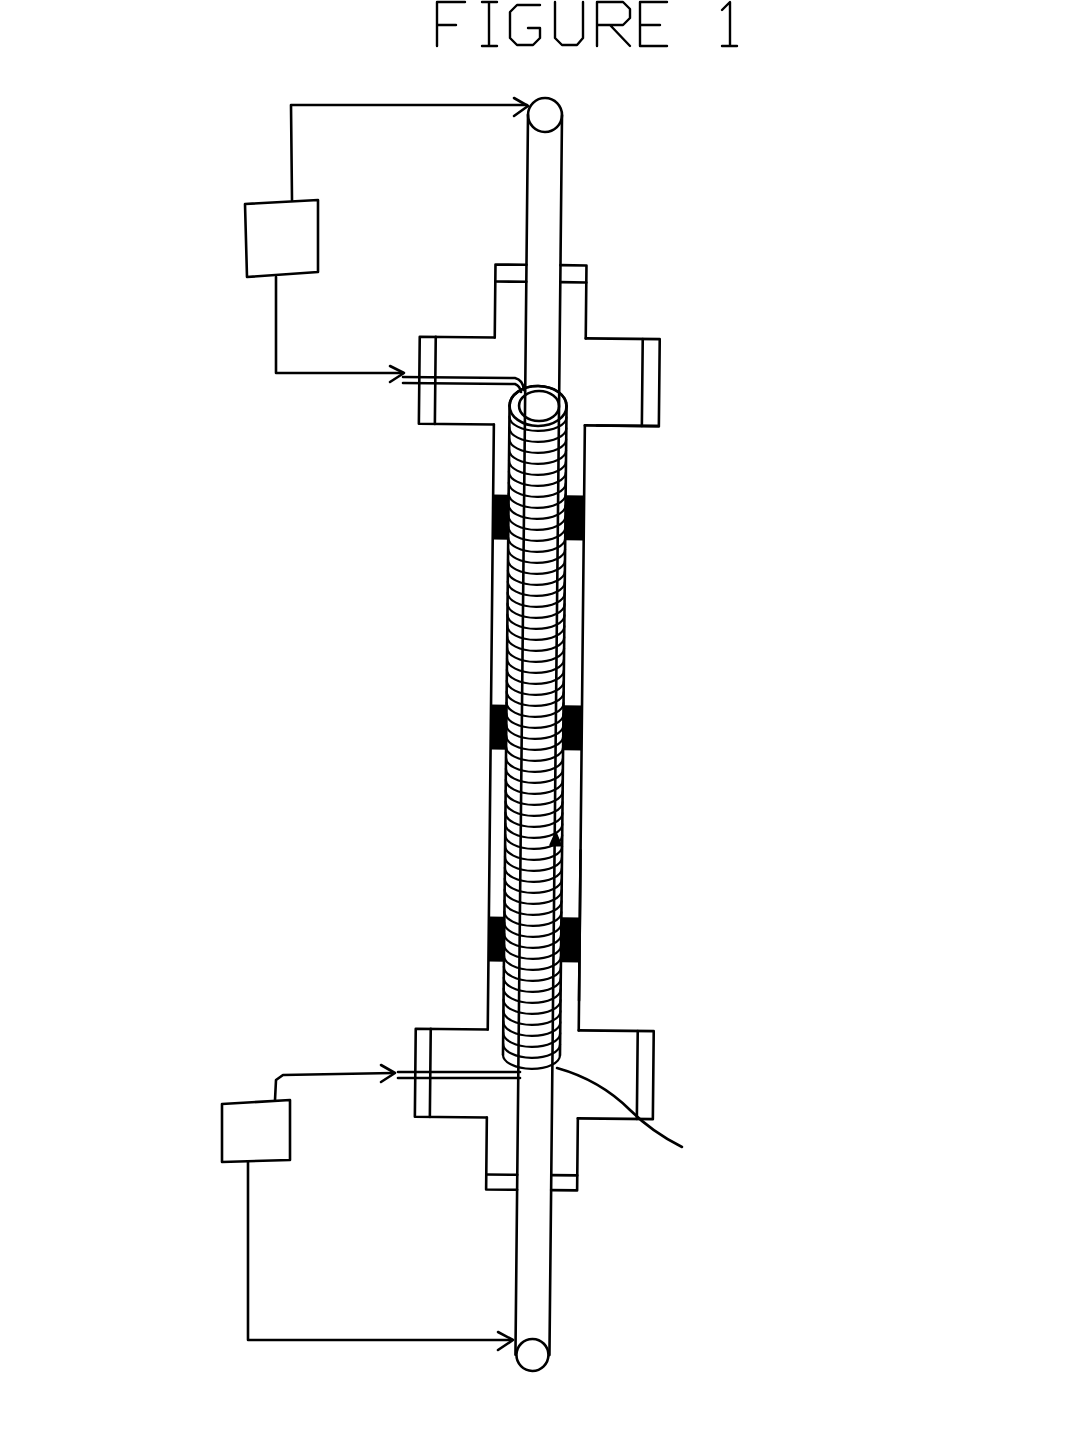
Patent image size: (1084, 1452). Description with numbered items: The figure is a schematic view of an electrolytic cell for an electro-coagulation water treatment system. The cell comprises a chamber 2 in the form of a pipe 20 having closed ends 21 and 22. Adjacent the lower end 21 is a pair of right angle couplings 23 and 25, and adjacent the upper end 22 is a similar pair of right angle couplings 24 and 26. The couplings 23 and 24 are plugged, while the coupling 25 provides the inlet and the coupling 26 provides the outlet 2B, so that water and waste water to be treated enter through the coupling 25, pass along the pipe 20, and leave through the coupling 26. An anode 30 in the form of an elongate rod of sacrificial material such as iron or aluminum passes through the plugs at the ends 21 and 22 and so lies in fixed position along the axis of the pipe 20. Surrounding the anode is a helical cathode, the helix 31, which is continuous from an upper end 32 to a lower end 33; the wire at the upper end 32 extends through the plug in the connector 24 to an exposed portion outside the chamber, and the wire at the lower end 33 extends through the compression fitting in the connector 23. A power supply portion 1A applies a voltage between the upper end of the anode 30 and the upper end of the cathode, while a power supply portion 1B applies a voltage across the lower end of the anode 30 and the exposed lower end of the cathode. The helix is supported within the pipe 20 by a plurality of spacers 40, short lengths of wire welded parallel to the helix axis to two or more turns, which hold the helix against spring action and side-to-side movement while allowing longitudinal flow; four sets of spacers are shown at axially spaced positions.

The power supply portion 1A is at (386, 245).
The power supply portion 1B is at (371, 1207).
The chamber 2 is at (585, 773).
The outlet 2B is at (667, 355).
The pipe 20 is at (585, 897).
The closed end 21 is at (503, 1193).
The closed end 22 is at (573, 272).
The right angle coupling 23 is at (443, 1030).
The right angle coupling 24 is at (450, 428).
The right angle coupling 25 is at (615, 1027).
The right angle coupling 26 is at (632, 428).
The anode 30 is at (540, 1227).
The helix 31 is at (512, 620).
The upper end 32 is at (565, 392).
The lower end 33 is at (647, 1123).
The spacers 40 is at (492, 732).